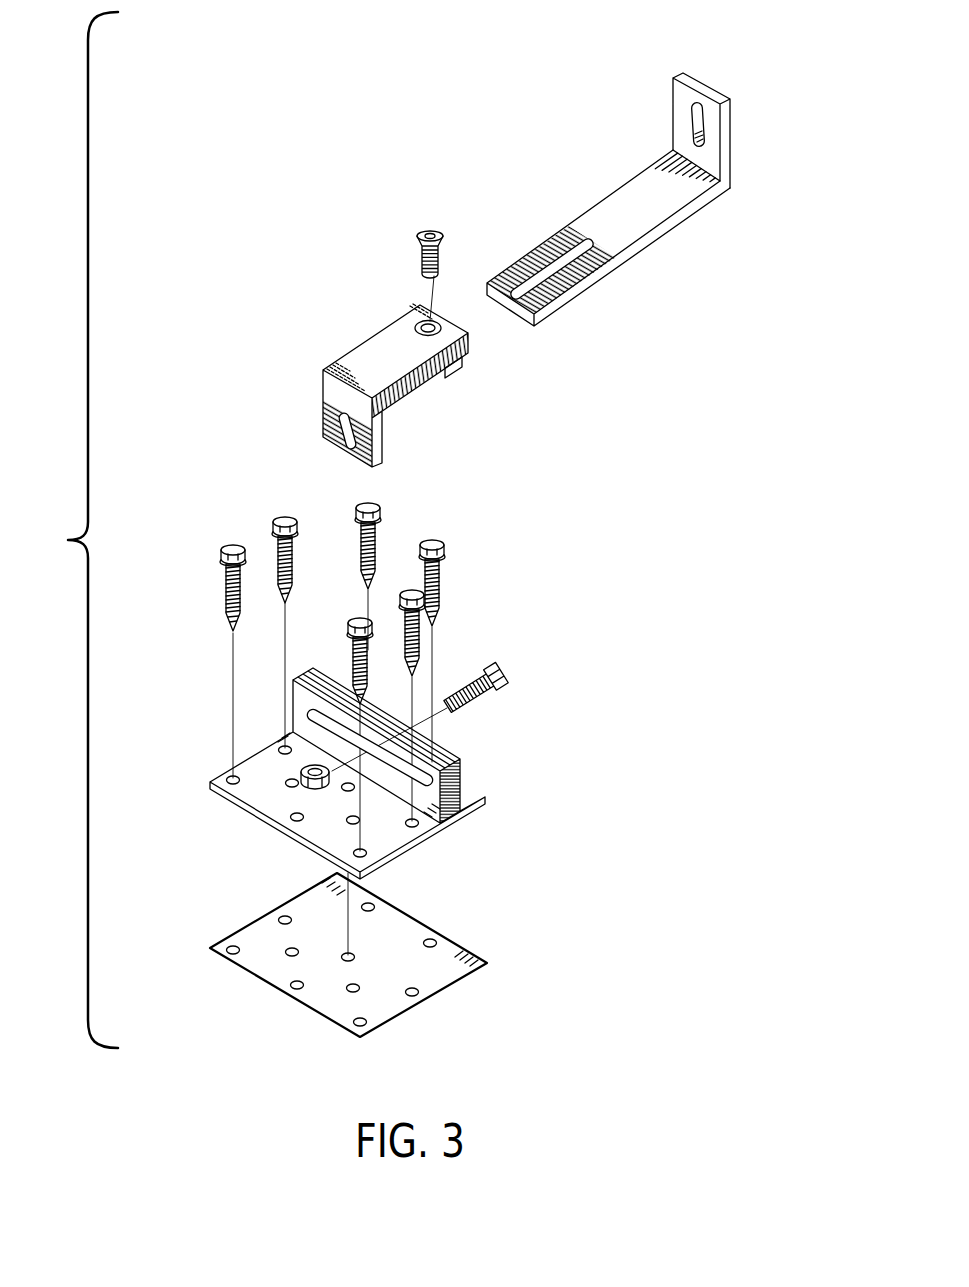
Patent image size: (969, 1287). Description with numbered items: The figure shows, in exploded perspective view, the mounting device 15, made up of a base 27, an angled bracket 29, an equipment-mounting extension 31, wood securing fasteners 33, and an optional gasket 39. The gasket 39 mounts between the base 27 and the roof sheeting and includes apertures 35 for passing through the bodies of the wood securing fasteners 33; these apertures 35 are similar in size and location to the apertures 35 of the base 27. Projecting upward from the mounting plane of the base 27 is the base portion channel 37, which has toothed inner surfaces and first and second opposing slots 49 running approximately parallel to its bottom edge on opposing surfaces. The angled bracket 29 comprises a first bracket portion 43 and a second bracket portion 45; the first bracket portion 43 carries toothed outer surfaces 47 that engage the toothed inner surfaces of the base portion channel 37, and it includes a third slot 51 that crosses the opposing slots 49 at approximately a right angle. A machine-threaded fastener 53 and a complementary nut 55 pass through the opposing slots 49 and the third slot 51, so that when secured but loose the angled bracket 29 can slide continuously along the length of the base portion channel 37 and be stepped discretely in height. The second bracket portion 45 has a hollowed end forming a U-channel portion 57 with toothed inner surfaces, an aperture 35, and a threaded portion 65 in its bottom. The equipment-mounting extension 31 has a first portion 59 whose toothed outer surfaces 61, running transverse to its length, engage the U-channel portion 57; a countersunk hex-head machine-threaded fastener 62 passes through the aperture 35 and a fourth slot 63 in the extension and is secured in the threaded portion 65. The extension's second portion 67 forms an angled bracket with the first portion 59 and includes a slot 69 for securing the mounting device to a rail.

The mounting device 15 is at (75, 530).
The base 27 is at (209, 805).
The angled bracket 29 is at (350, 284).
The equipment-mounting extension 31 is at (552, 124).
The wood securing fasteners 33 is at (228, 545).
The apertures 35 is at (434, 322).
The base portion channel 37 is at (462, 772).
The gasket 39 is at (470, 950).
The first bracket portion 43 is at (322, 378).
The second bracket portion 45 is at (343, 352).
The toothed outer surfaces 47 is at (325, 405).
The first and second opposing slots 49 is at (392, 776).
The third slot 51 is at (343, 432).
The machine-threaded fastener 53 is at (497, 667).
The nut 55 is at (302, 772).
The U-channel portion 57 is at (462, 350).
The first portion 59 is at (603, 197).
The toothed outer surfaces 61 is at (542, 243).
The machine-threaded fastener 62 is at (433, 231).
The fourth slot 63 is at (560, 230).
The threaded portion 65 is at (452, 372).
The second portion 67 is at (710, 88).
The slot 69 is at (688, 122).